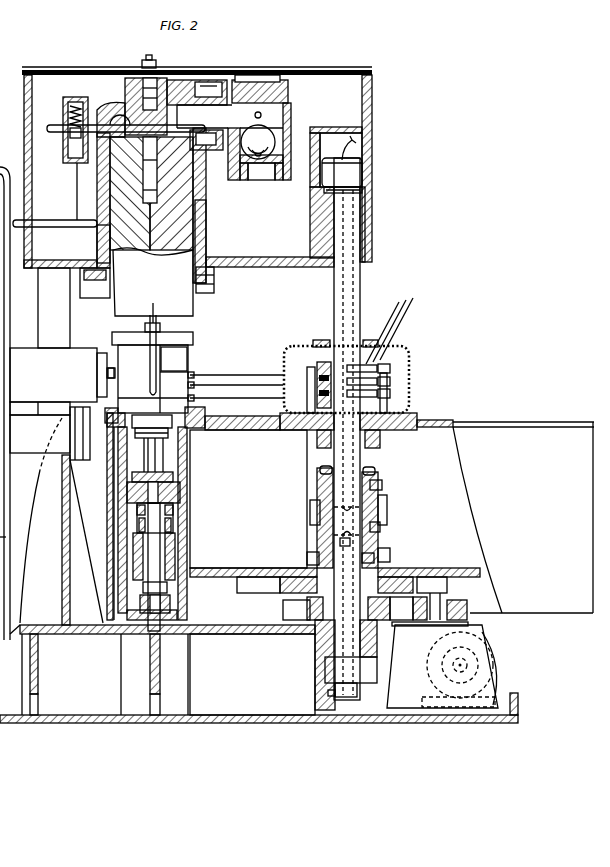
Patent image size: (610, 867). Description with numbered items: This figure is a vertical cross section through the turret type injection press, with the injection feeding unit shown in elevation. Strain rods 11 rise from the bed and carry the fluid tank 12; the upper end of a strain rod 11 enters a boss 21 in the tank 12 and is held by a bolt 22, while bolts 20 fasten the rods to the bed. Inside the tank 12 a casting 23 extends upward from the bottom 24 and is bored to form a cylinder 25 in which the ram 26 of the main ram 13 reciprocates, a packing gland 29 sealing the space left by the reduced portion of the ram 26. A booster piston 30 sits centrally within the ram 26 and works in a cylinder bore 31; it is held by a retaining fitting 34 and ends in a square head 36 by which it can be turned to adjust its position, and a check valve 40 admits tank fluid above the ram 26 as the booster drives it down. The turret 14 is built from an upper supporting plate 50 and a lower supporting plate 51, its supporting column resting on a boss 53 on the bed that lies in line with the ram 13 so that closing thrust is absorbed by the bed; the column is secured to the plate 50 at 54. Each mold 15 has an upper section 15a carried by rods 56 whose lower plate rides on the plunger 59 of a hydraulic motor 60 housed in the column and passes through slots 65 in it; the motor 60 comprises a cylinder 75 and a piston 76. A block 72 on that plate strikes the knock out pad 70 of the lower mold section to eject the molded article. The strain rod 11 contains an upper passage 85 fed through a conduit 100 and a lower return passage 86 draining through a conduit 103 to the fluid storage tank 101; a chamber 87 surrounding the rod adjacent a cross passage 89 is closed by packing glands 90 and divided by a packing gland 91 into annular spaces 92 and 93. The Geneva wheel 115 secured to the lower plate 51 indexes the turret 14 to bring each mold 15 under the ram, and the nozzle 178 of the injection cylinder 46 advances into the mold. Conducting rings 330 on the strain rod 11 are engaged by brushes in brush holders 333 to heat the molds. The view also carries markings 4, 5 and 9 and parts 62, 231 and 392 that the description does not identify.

The section line 4- 4 is at (138, 303).
The section line 5- 5 is at (103, 312).
The section line 9- 9 is at (210, 588).
The strain rods 11 is at (360, 281).
The fluid tank 12 is at (373, 100).
The main ram 13 is at (207, 211).
The turret 14 is at (560, 422).
The molds 15 is at (192, 356).
The upper mold section 15a is at (132, 369).
The bolts 20 is at (353, 696).
The bosses 21 is at (373, 212).
The bolts 22 is at (364, 168).
The casting 23 is at (125, 105).
The bottom 24 is at (267, 258).
The cylinder 25 is at (206, 235).
The ram 26 is at (97, 243).
The packing gland 29 is at (196, 276).
The booster piston 30 is at (157, 172).
The cylinder bore 31 is at (148, 198).
The retaining fitting 34 is at (157, 80).
The square head 36 is at (143, 62).
The check valve 40 is at (272, 135).
The injection cylinder 46 is at (32, 352).
The upper supporting plate 50 is at (442, 420).
The lower supporting plate 51 is at (446, 568).
The boss 53 is at (172, 614).
The column securement 54 is at (172, 438).
The vertically extending rods 56 is at (150, 376).
The plunger 59 is at (148, 517).
The hydraulically actuated motor 60 is at (180, 525).
The block 62 is at (187, 494).
The slots 65 is at (165, 452).
The knock out pad 70 is at (118, 468).
The block 72 is at (132, 477).
The cylinder 75 is at (143, 587).
The piston 76 is at (140, 603).
The upper passage 85 is at (352, 302).
The lower passage 86 is at (370, 558).
The annular chamber 87 is at (386, 505).
The cross passage 89 is at (350, 545).
The packing gland 90 is at (333, 460).
The dividing packing gland 91 is at (318, 528).
The annular space 92 is at (380, 480).
The annular space 93 is at (378, 531).
The conduit 100 is at (355, 150).
The fluid storage tank 101 is at (262, 690).
The conduit 103 is at (320, 695).
The Geneva wheel 115 is at (258, 593).
The nozzle 178 is at (116, 367).
The gear housing 231 is at (290, 353).
The electrical conducting rings 330 is at (368, 372).
The brush holders 333 is at (392, 394).
The plate 392 is at (420, 421).